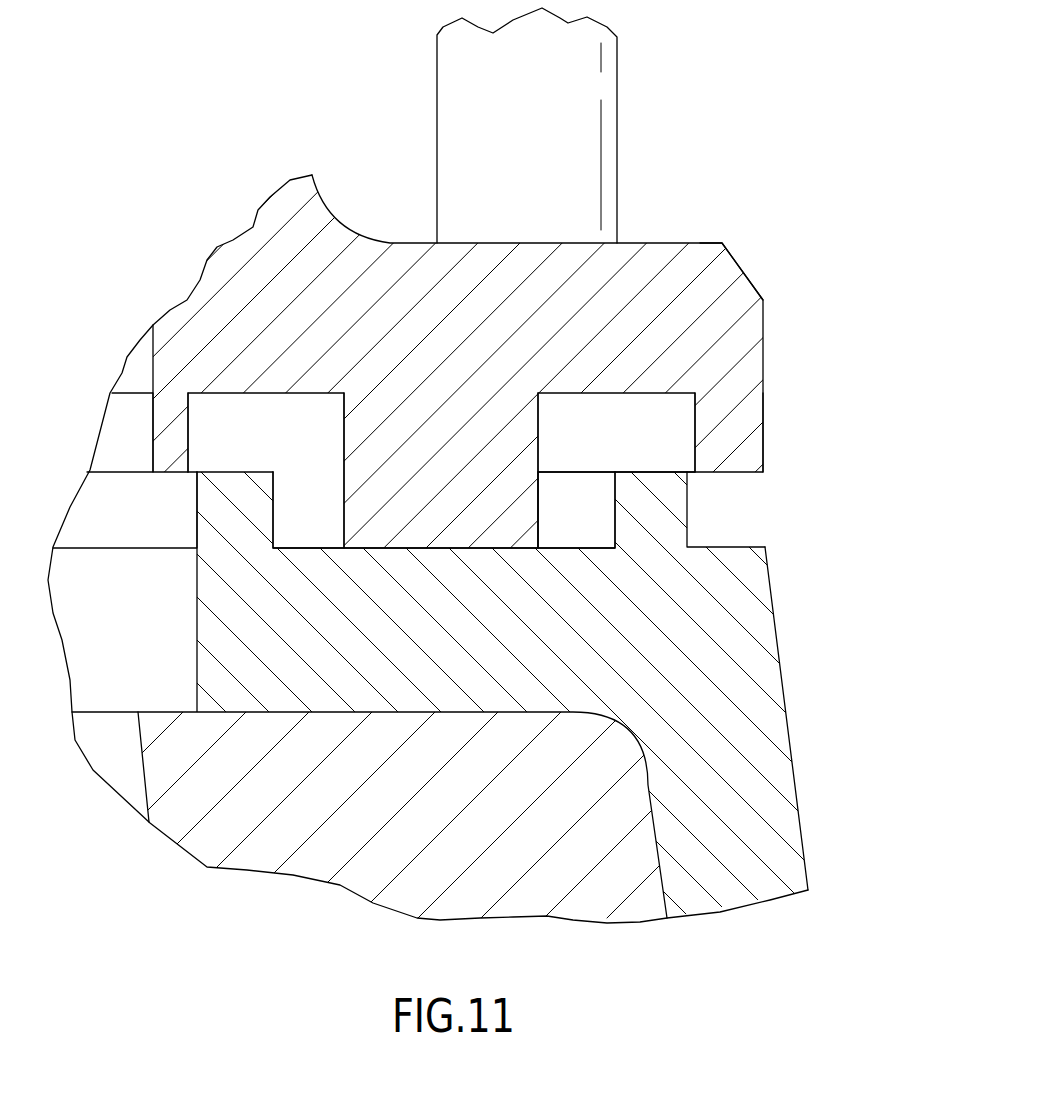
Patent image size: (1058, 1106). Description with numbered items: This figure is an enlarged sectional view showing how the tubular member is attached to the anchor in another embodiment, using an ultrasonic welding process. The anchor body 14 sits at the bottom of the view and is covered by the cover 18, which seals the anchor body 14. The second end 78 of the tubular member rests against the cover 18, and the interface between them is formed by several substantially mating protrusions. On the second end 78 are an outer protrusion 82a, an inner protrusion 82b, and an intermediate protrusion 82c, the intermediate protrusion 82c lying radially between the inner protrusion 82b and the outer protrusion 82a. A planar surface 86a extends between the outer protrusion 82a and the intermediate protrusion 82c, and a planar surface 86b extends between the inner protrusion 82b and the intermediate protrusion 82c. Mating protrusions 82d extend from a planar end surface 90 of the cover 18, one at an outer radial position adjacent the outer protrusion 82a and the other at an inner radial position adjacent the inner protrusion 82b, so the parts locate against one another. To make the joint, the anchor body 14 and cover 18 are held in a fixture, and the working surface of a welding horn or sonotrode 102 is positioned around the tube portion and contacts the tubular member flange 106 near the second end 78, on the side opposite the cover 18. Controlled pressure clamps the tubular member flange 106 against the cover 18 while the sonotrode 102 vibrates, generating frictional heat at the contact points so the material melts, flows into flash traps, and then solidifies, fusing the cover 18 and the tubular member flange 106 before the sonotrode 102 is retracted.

The anchor body 14 is at (607, 902).
The cover 18 is at (815, 699).
The second end 78 is at (828, 346).
The outer protrusion 82a is at (747, 425).
The inner protrusion 82b is at (153, 419).
The intermediate protrusion 82c is at (427, 523).
The mating protrusion 82d is at (213, 515).
The planar surface 86a is at (600, 395).
The planar surface 86b is at (258, 393).
The planar end surface 90 is at (550, 548).
The sonotrode 102 is at (585, 87).
The tubular member flange 106 is at (717, 270).